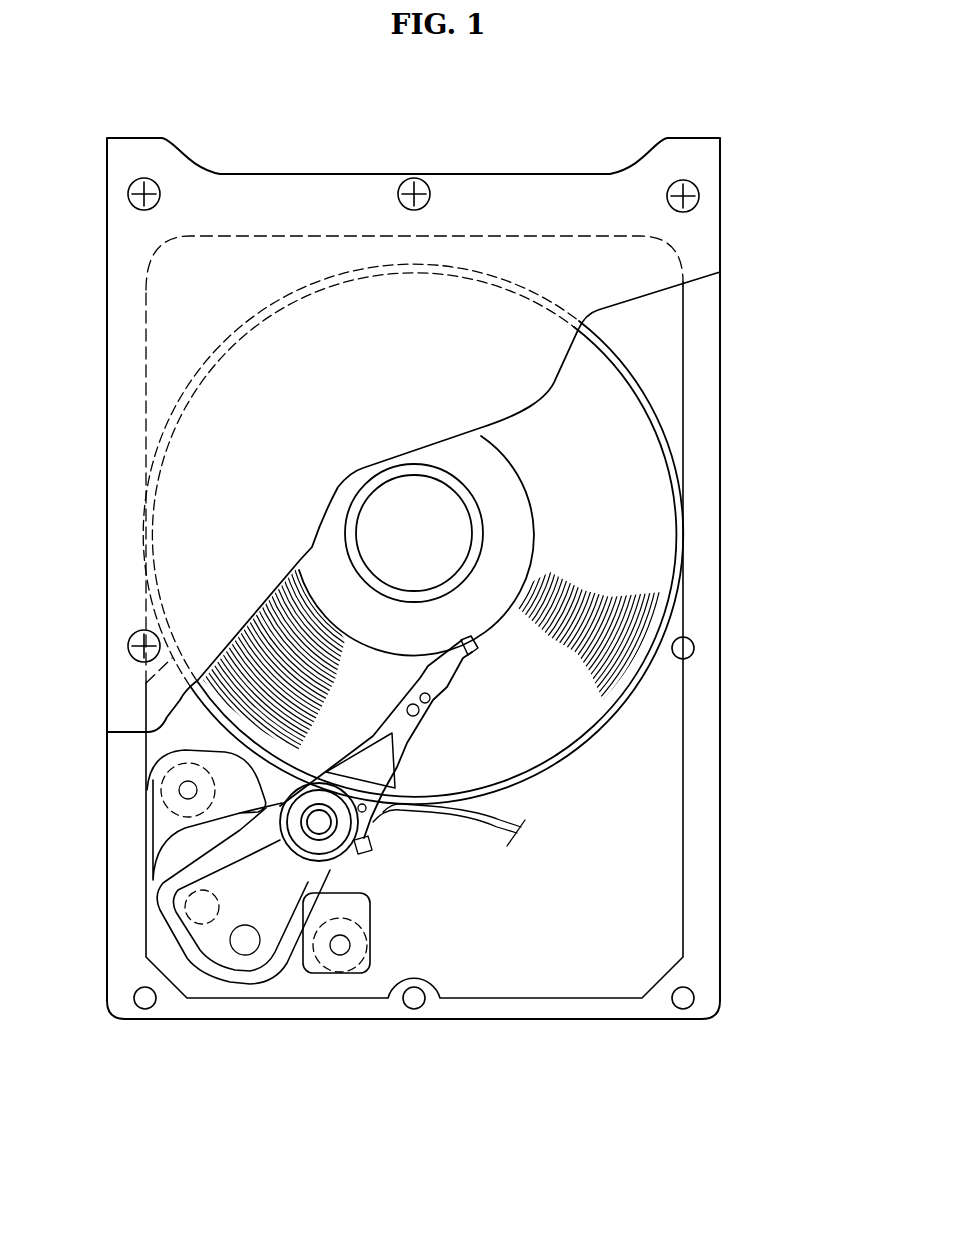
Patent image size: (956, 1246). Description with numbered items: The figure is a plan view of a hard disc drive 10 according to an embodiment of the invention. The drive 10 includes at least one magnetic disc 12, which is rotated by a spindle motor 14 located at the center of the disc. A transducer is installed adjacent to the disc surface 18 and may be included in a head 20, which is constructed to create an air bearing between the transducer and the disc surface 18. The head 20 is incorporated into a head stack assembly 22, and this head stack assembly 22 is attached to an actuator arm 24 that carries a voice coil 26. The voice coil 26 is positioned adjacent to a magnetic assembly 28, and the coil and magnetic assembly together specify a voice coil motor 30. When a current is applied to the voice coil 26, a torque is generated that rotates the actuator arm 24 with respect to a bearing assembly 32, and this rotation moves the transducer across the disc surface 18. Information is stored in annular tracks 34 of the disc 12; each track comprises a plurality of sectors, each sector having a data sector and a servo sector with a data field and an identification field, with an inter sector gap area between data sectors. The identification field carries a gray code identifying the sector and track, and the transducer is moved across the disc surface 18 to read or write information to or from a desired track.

The hard disc drive 10 is at (773, 162).
The magnetic disc 12 is at (642, 477).
The spindle motor 14 is at (395, 510).
The disc surface 18 is at (615, 533).
The head 20 is at (463, 666).
The head stack assembly 22 is at (414, 736).
The actuator arm 24 is at (240, 820).
The voice coil 26 is at (187, 898).
The magnetic assembly 28 is at (187, 850).
The voice coil motor 30 is at (281, 965).
The bearing assembly 32 is at (333, 842).
The annular tracks 34 is at (262, 665).